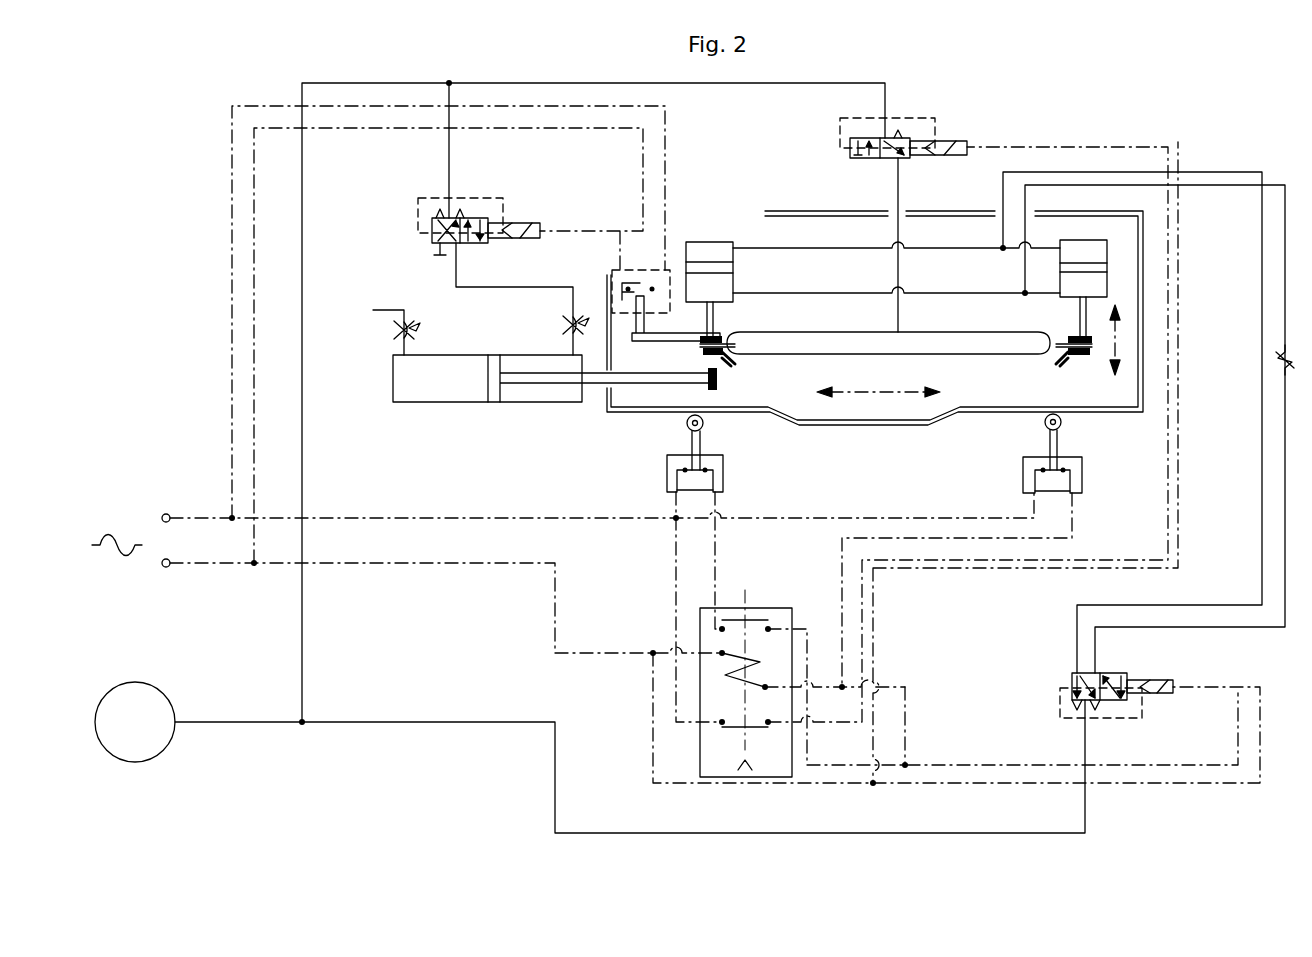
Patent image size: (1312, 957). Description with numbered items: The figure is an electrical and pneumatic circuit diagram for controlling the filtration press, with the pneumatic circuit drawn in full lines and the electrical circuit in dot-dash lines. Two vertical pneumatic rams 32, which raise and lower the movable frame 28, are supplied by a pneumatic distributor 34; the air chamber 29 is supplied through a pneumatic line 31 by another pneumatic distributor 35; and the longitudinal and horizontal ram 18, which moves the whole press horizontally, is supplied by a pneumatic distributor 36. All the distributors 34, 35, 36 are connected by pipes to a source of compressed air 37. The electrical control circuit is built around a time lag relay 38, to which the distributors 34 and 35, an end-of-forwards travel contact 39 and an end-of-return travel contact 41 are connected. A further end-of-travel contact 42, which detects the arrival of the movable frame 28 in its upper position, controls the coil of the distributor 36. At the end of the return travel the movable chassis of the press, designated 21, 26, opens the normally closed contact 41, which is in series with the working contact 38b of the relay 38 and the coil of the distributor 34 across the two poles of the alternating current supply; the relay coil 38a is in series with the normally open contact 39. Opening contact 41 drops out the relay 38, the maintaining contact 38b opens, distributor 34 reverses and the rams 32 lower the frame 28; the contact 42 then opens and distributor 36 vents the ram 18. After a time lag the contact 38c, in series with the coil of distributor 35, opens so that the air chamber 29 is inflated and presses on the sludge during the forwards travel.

The longitudinal and horizontal ram 18 is at (440, 385).
The movable chassis of the press 21 is at (875, 339).
The movable chassis of the press 26 is at (985, 412).
The movable frame 28 is at (1082, 360).
The air chamber 29 is at (822, 346).
The pneumatic line 31 is at (898, 268).
The pneumatic rams 32 is at (707, 242).
The pneumatic distributor 34 is at (1103, 688).
The pneumatic distributor 35 is at (905, 140).
The pneumatic distributor 36 is at (432, 237).
The source of compressed air 37 is at (152, 683).
The time lag relay 38 is at (796, 693).
The coil 38a is at (768, 673).
The working contact 38b is at (760, 618).
The inoperative contact 38c is at (735, 729).
The end-of-forwards travel contact 39 is at (1060, 470).
The end-of-return travel contact 41 is at (725, 475).
The end-of-travel contact 42 is at (612, 280).